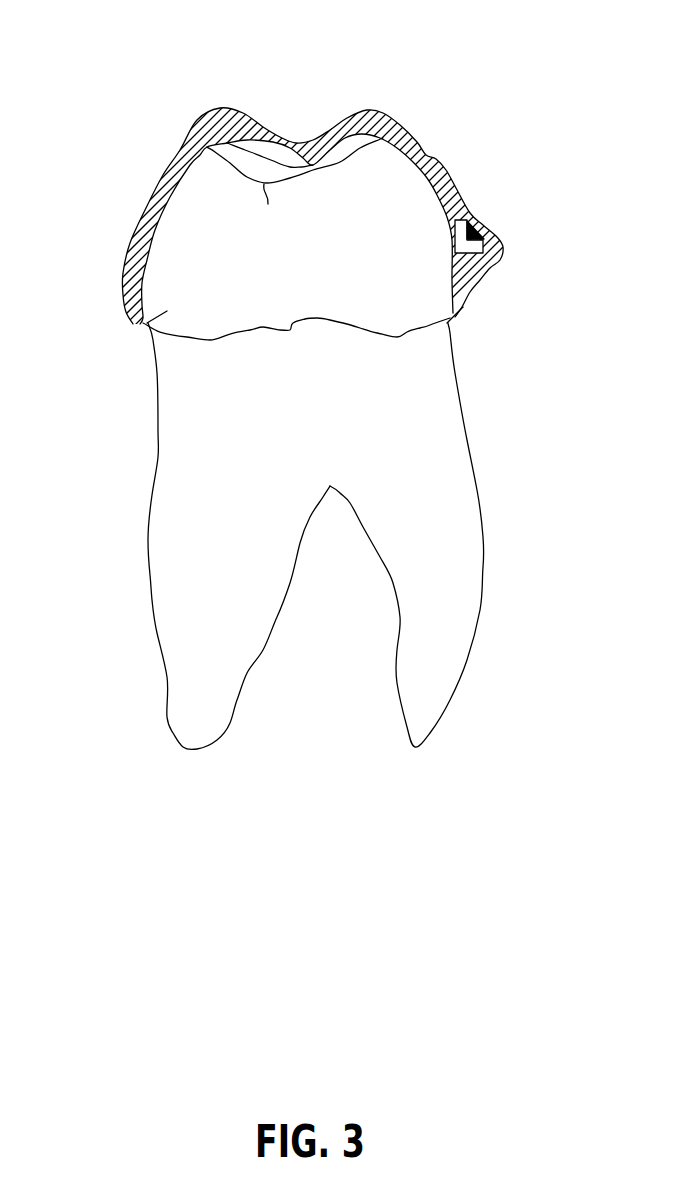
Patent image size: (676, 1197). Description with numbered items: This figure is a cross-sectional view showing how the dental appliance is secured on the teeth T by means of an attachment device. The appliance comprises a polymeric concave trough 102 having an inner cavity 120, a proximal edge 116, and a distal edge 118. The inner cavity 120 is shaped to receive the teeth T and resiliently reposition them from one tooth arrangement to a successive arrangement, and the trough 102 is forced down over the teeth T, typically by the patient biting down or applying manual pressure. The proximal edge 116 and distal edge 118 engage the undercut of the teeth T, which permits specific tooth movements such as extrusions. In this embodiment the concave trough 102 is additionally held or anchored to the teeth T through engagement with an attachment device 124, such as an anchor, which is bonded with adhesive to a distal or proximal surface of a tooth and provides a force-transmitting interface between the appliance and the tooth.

The polymeric concave trough 102 is at (397, 122).
The inner cavity 120 is at (337, 163).
The attachment device 124 is at (480, 222).
The proximal edge 116 is at (137, 324).
The distal edge 118 is at (453, 317).
The teeth T is at (147, 323).